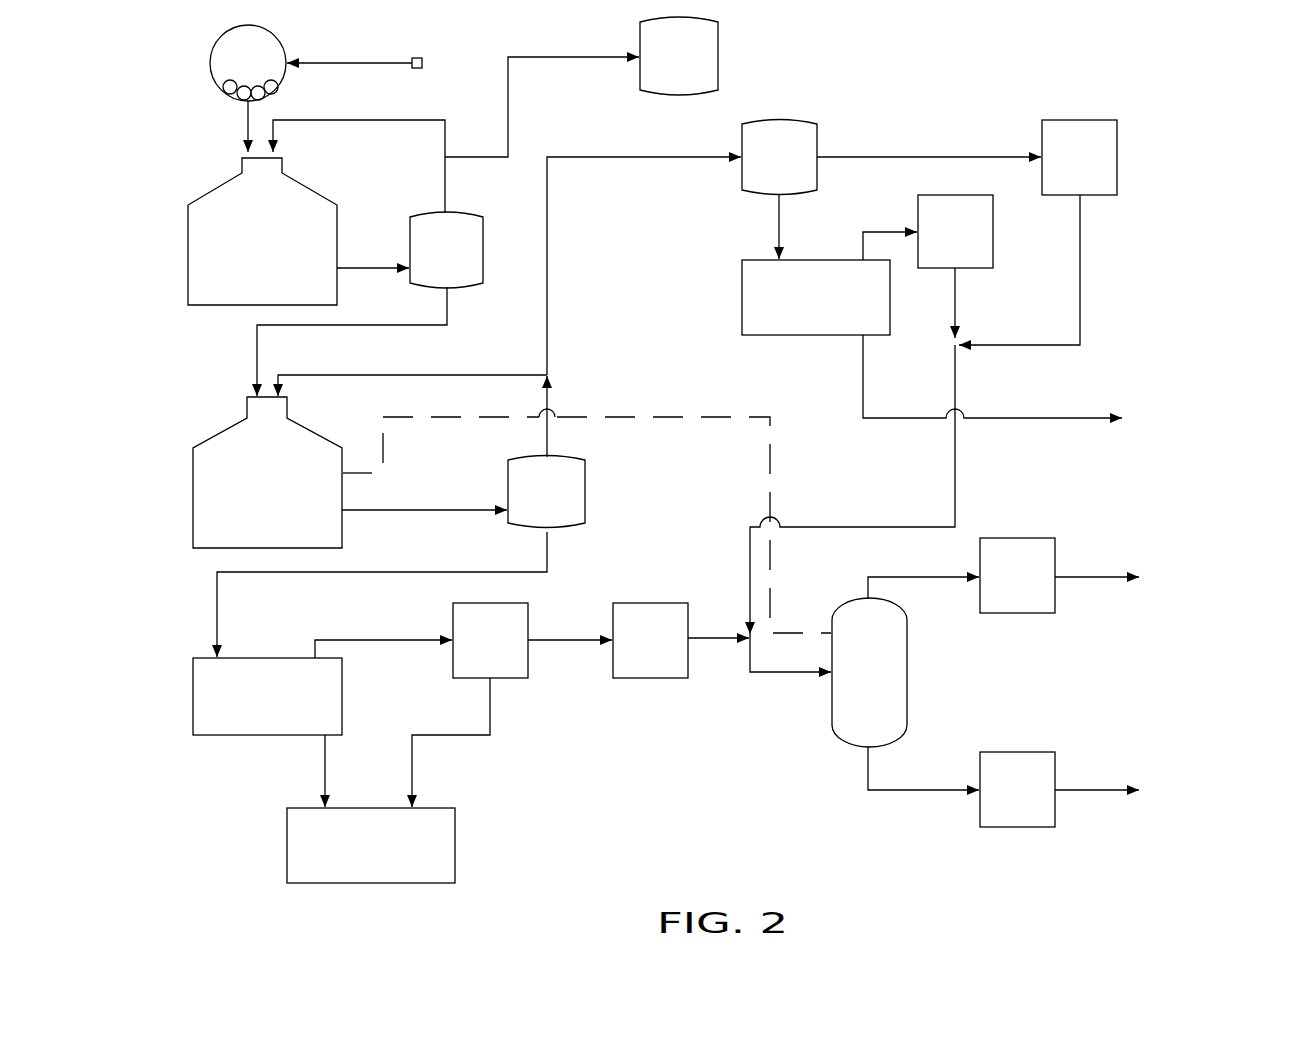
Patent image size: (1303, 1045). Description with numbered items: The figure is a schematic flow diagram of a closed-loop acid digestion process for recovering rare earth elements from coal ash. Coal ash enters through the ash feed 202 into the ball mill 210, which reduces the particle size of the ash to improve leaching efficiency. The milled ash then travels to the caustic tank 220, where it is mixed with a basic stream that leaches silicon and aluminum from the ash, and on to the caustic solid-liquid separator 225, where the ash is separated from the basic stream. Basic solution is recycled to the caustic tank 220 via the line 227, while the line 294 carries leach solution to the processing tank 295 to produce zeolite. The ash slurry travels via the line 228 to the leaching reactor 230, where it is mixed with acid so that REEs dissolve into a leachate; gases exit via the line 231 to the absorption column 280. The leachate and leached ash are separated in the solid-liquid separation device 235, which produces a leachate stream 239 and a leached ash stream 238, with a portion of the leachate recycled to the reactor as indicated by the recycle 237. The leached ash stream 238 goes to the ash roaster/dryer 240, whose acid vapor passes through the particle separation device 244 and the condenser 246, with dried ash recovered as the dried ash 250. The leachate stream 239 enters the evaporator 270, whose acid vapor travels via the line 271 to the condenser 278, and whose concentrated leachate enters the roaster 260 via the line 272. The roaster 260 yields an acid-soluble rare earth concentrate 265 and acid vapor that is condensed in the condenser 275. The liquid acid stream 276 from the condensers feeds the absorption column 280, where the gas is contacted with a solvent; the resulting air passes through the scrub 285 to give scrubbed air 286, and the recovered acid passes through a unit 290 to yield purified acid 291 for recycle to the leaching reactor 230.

The ball mill 210 is at (215, 83).
The ash feed 202 is at (385, 63).
The caustic tank 220 is at (244, 267).
The caustic solid-liquid separator 225 is at (423, 267).
The line 227 is at (343, 121).
The line 228 is at (380, 325).
The line 294 is at (528, 58).
The processing tank 295 is at (655, 71).
The leachate stream 239 is at (547, 250).
The recycled leachate portion 237 is at (367, 375).
The leaching reactor 230 is at (243, 507).
The solid-liquid separation device 235 is at (523, 506).
The leached ash stream 238 is at (248, 572).
The ash roaster/dryer 240 is at (243, 694).
The particle separation device 244 is at (466, 656).
The condenser 246 is at (626, 656).
The dried ash 250 is at (347, 842).
The evaporator 270 is at (756, 171).
The line 271 is at (833, 157).
The line 272 is at (779, 213).
The roaster 260 is at (792, 291).
The condenser 275 is at (931, 246).
The condenser 278 is at (1056, 171).
The acid-soluble rare earth concentrate 265 is at (1049, 402).
The line 231 is at (745, 417).
The liquid acid stream 276 is at (750, 567).
The absorption column 280 is at (846, 687).
The scrub 285 is at (993, 589).
The scrubbed air 286 is at (1157, 603).
The acid purifier 290 is at (993, 802).
The purified acid 291 is at (1154, 807).